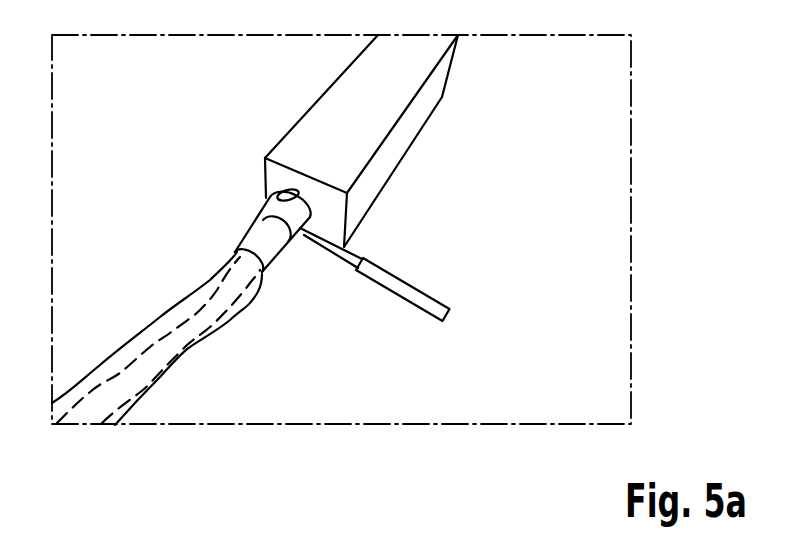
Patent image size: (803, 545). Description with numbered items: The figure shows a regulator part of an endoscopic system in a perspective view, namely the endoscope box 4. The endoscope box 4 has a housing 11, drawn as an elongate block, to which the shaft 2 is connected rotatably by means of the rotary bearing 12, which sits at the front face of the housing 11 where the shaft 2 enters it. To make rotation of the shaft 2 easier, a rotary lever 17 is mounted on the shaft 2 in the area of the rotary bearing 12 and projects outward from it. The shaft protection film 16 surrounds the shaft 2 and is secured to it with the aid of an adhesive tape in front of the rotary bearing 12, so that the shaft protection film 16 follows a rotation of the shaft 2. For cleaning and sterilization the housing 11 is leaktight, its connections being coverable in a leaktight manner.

The shaft 2 is at (158, 340).
The endoscope box 4 is at (487, 150).
The housing 11 is at (332, 112).
The rotary bearing 12 is at (271, 197).
The shaft protection film 16 is at (108, 369).
The rotary lever 17 is at (402, 290).